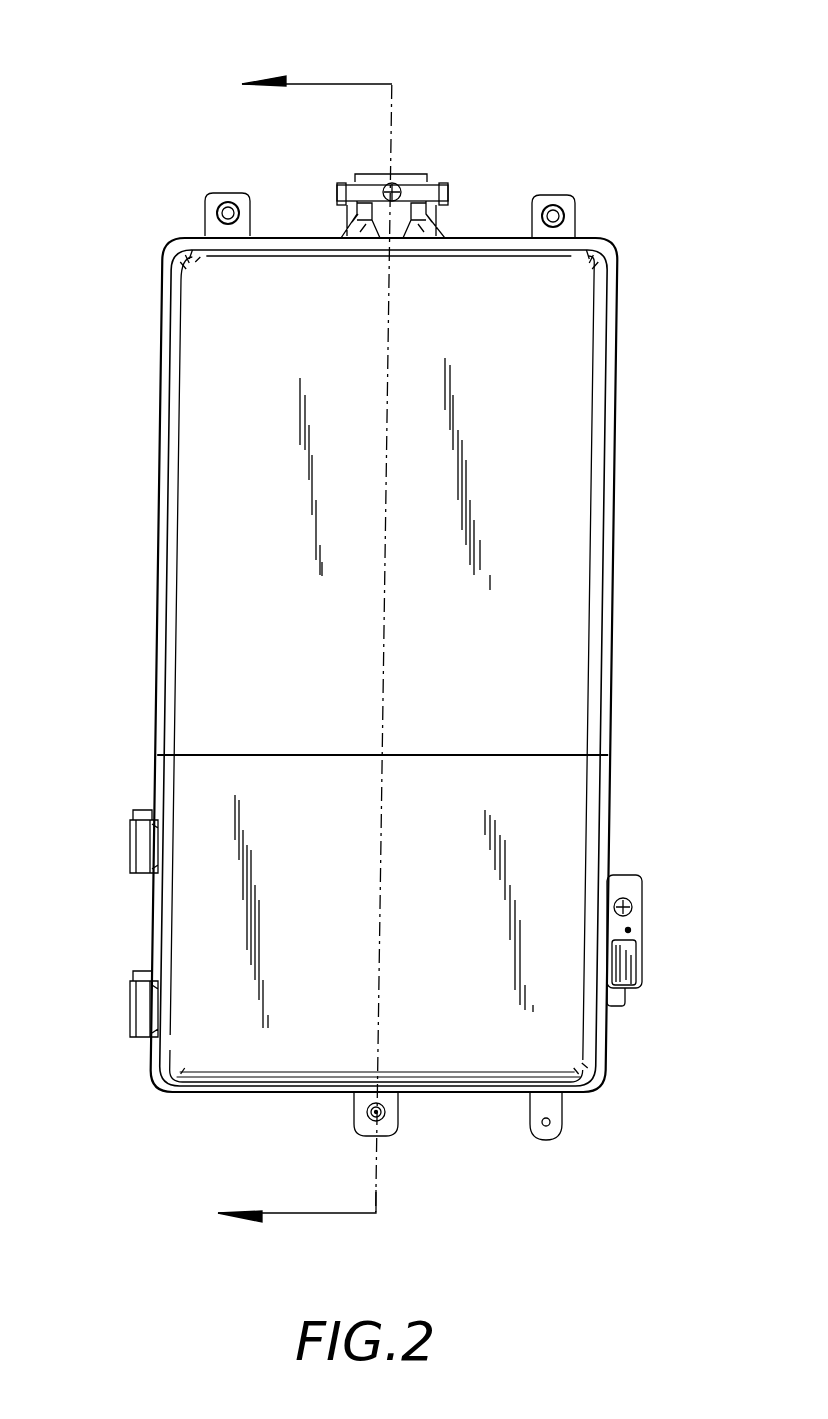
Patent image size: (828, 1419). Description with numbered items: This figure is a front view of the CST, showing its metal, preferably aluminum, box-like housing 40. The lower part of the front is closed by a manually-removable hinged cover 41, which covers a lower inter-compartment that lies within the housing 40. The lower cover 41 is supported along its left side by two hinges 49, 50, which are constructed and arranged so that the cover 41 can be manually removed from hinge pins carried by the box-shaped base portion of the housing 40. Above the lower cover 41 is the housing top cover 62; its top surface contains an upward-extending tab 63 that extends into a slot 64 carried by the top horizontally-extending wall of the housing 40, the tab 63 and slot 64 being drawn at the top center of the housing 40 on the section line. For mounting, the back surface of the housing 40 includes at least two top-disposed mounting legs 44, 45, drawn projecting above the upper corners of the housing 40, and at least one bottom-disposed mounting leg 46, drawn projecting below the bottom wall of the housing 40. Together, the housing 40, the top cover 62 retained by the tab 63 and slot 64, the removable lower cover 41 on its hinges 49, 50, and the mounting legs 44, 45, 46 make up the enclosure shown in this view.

The housing 40 is at (359, 645).
The manually-removable hinged cover 41 is at (493, 943).
The top-disposed mounting leg 44 is at (556, 218).
The top-disposed mounting leg 45 is at (225, 213).
The bottom-disposed mounting leg 46 is at (384, 1118).
The hinge 49 is at (130, 849).
The hinge 50 is at (130, 1001).
The housing top cover 62 is at (512, 660).
The upward-extending tab 63 is at (410, 232).
The slot 64 is at (356, 222).